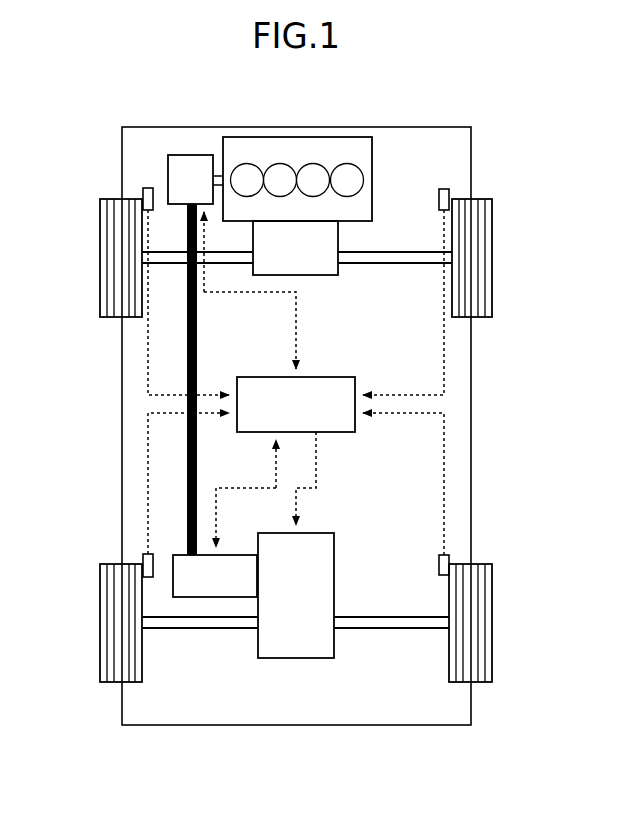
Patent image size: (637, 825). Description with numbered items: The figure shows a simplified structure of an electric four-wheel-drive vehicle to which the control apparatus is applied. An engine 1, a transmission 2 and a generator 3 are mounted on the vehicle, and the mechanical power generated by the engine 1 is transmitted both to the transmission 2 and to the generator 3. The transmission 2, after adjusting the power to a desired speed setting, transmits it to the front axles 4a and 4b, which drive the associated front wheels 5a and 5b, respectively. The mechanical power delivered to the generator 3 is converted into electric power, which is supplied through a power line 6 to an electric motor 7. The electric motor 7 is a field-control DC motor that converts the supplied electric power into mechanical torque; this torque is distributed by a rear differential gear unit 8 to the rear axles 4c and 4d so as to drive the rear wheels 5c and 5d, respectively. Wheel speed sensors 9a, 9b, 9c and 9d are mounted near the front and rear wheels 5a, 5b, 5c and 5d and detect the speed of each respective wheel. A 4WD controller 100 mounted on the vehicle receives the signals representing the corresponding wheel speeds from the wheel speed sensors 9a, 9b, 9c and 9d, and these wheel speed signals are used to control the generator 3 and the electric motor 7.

The engine 1 is at (307, 150).
The transmission 2 is at (318, 275).
The generator 3 is at (190, 155).
The front axle 4a is at (170, 266).
The front axle 4b is at (390, 266).
The rear axle 4c is at (200, 630).
The rear axle 4d is at (390, 630).
The front wheel 5a is at (118, 235).
The front wheel 5b is at (478, 235).
The rear wheel 5c is at (112, 623).
The rear wheel 5d is at (478, 622).
The power line 6 is at (187, 436).
The electric motor 7 is at (236, 555).
The rear differential gear unit 8 is at (295, 660).
The wheel speed sensor 9a is at (147, 188).
The wheel speed sensor 9b is at (441, 189).
The wheel speed sensor 9c is at (146, 555).
The wheel speed sensor 9d is at (440, 559).
The 4WD controller 100 is at (337, 432).